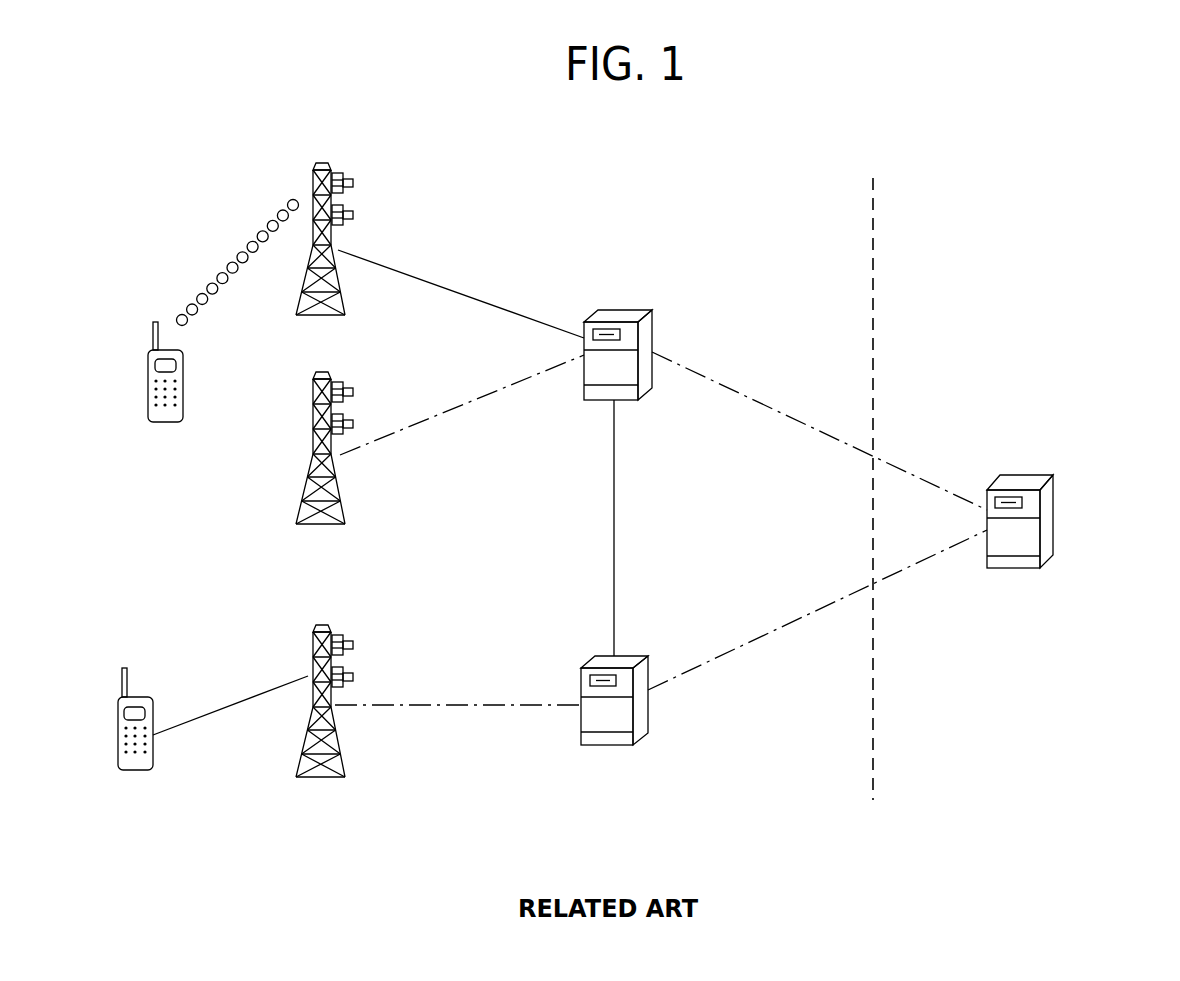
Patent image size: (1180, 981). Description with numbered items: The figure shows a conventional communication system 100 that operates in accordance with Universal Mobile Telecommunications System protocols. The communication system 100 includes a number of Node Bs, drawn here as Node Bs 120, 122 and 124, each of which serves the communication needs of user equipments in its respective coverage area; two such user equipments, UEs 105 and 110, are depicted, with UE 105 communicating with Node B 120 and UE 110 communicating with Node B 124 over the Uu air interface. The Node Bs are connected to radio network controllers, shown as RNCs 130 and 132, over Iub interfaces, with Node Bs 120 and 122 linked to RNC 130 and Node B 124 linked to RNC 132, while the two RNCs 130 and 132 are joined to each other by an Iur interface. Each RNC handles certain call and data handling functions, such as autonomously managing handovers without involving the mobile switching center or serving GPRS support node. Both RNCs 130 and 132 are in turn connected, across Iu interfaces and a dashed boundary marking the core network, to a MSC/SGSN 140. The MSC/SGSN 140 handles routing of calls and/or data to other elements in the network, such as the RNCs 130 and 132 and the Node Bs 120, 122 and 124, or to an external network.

The communication system 100 is at (684, 147).
The UE 105 is at (183, 408).
The UE 110 is at (143, 698).
The Node B 120 is at (360, 196).
The Node B 122 is at (360, 406).
The Node B 124 is at (362, 658).
The RNC 130 is at (652, 330).
The RNC 132 is at (650, 662).
The MSC/SGSN 140 is at (1027, 475).